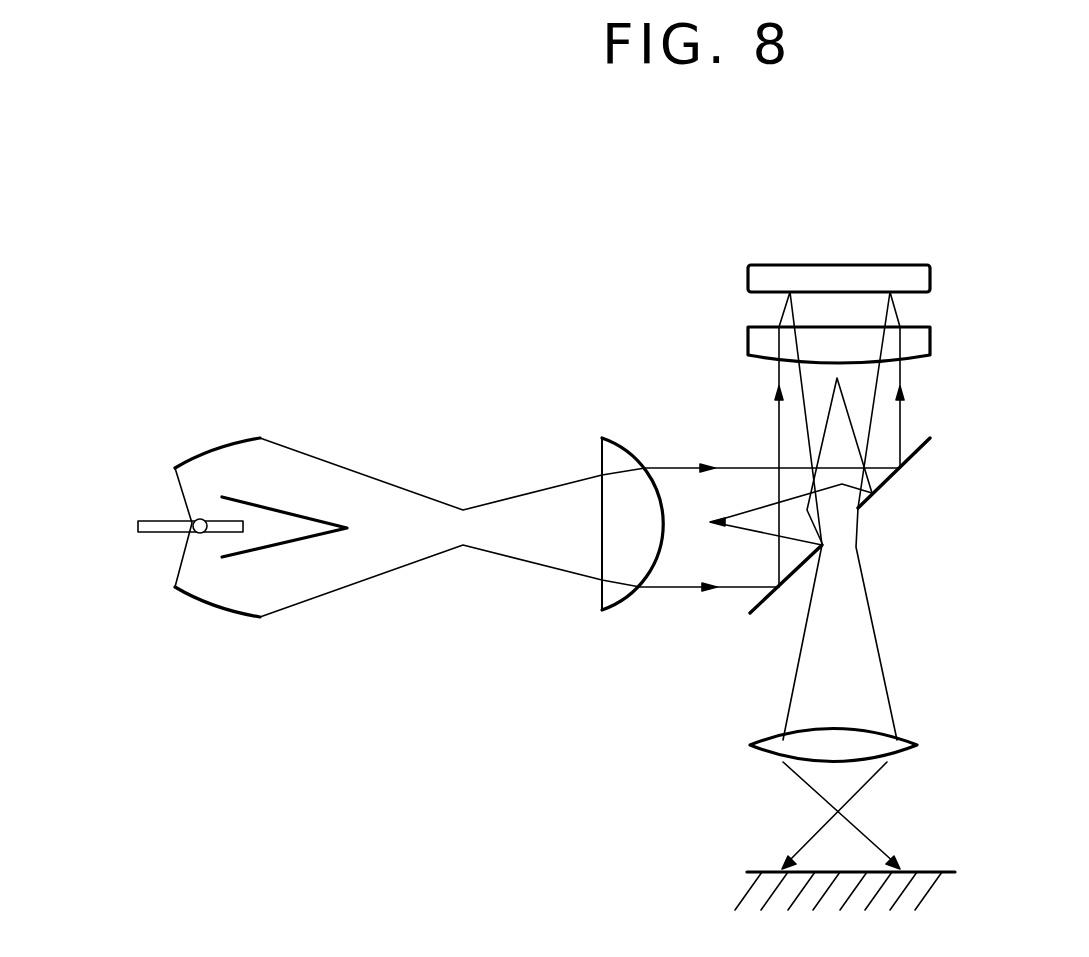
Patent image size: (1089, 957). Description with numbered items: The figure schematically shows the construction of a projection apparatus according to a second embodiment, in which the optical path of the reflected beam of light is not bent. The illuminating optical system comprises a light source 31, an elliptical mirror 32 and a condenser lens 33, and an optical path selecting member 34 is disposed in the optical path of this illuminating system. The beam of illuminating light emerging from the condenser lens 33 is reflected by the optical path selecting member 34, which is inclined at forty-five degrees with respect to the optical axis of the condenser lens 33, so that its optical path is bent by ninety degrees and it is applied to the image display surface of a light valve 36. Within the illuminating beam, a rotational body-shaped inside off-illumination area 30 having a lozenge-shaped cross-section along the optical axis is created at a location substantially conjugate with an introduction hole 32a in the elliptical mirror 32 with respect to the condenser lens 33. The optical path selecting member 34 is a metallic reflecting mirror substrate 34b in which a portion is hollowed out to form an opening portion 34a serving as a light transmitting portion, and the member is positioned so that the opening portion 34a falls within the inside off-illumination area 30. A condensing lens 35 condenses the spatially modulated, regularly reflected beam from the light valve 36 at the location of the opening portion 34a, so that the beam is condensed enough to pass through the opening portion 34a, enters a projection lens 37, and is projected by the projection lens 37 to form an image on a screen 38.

The inside off-illumination area 30 is at (763, 518).
The light source 31 is at (227, 518).
The elliptical mirror 32 is at (232, 440).
The introduction hole 32a is at (158, 510).
The condenser lens 33 is at (617, 458).
The optical path selecting member 34 is at (928, 460).
The opening portion 34a is at (839, 550).
The metallic reflecting mirror substrate 34b is at (797, 575).
The condensing lens 35 is at (910, 338).
The light valve 36 is at (910, 273).
The projection lens 37 is at (920, 743).
The screen 38 is at (927, 870).